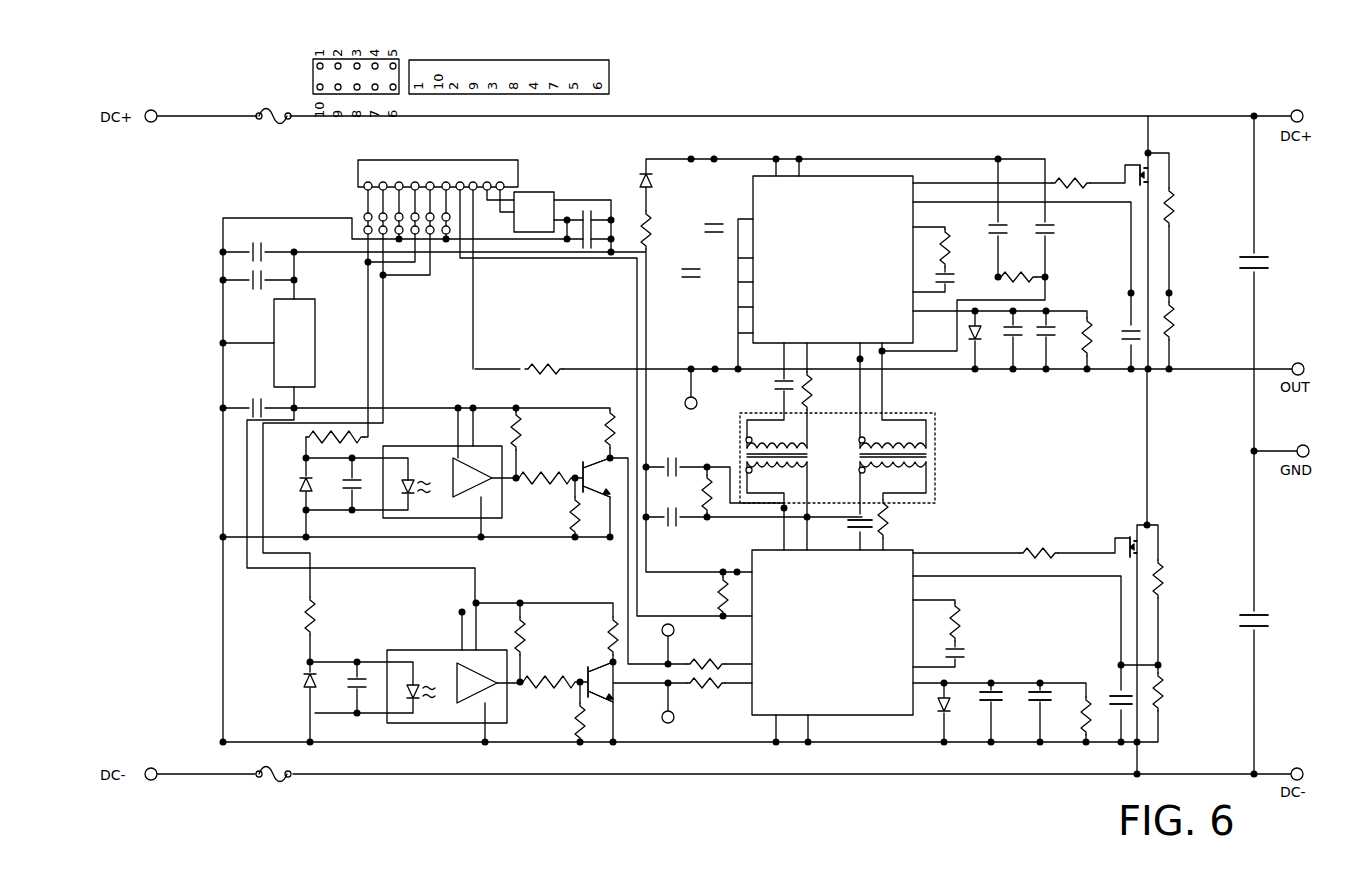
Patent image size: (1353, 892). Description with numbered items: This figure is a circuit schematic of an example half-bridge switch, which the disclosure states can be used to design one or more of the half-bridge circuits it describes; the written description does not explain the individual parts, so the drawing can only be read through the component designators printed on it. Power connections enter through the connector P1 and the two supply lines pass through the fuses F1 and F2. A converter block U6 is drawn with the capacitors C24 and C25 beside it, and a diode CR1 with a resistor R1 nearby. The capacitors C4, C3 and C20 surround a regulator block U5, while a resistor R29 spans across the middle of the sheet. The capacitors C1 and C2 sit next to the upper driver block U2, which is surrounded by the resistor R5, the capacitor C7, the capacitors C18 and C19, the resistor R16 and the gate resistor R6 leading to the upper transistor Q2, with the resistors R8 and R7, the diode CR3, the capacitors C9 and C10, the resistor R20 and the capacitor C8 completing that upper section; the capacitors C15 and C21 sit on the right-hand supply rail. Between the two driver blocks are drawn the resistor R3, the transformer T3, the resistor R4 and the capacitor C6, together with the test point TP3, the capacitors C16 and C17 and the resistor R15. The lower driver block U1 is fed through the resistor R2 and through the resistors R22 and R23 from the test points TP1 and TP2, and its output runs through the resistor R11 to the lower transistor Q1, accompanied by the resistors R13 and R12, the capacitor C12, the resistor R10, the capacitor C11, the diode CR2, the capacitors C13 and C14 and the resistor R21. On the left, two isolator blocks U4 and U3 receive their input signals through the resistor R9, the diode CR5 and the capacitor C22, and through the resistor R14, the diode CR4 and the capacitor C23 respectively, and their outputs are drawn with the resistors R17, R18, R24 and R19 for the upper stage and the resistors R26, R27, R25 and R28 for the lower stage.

The input connector P1 is at (425, 175).
The fuse F1 is at (273, 106).
The fuse F2 is at (273, 764).
The DC-DC converter U6 is at (534, 208).
The capacitor C24 is at (590, 219).
The capacitor C25 is at (580, 239).
The diode CR1 is at (630, 179).
The resistor R1 is at (656, 229).
The capacitor C4 is at (265, 245).
The capacitor C3 is at (259, 287).
The capacitor C20 is at (258, 404).
The voltage regulator M78L05 U5 is at (310, 343).
The resistor R29 is at (547, 358).
The capacitor C1 is at (682, 272).
The capacitor C2 is at (718, 217).
The high side gate driver IXBD4411 U2 is at (834, 262).
The resistor R5 is at (962, 243).
The capacitor C7 is at (959, 279).
The capacitor C18 is at (1009, 229).
The capacitor C19 is at (1066, 229).
The resistor R16 is at (1017, 278).
The gate resistor R6 is at (1071, 168).
The high side MOSFET Q2 is at (1134, 171).
The resistor R8 is at (1181, 207).
The resistor R7 is at (1183, 321).
The diode 1N5817 CR3 is at (993, 340).
The capacitor C9 is at (1022, 344).
The capacitor C10 is at (1057, 344).
The resistor R20 is at (1098, 340).
The capacitor C8 is at (1121, 332).
The capacitor C15 is at (1265, 252).
The capacitor C21 is at (1265, 610).
The resistor R3 is at (818, 390).
The transformer T3 is at (837, 458).
The resistor R4 is at (893, 519).
The capacitor C6 is at (844, 513).
The test point TP3 is at (691, 420).
The capacitor C16 is at (665, 466).
The capacitor C17 is at (674, 517).
The resistor R15 is at (707, 494).
The low side gate driver IXBD4410 U1 is at (833, 637).
The resistor R2 is at (710, 596).
The resistor R22 is at (708, 656).
The resistor R23 is at (708, 692).
The test point TP1 is at (667, 631).
The test point TP2 is at (666, 718).
The gate resistor R11 is at (1039, 538).
The low side MOSFET Q1 is at (1124, 540).
The resistor R13 is at (1170, 578).
The resistor R12 is at (1172, 692).
The capacitor C12 is at (1110, 680).
The resistor R10 is at (972, 622).
The capacitor C11 is at (971, 656).
The diode 1N5817 CR2 is at (962, 710).
The capacitor C13 is at (1004, 708).
The capacitor C14 is at (1054, 708).
The resistor R21 is at (1098, 716).
The resistor R9 is at (343, 444).
The diode CR5 is at (289, 484).
The capacitor C22 is at (339, 486).
The optocoupler 6N137 U4 is at (439, 482).
The resistor R17 is at (529, 434).
The resistor R18 is at (545, 480).
The resistor R24 is at (597, 430).
The resistor R19 is at (563, 516).
The resistor R14 is at (323, 615).
The diode CR4 is at (291, 683).
The capacitor C23 is at (344, 689).
The optocoupler 6N137 U3 is at (445, 685).
The resistor R26 is at (533, 636).
The resistor R27 is at (549, 685).
The resistor R25 is at (600, 636).
The resistor R28 is at (567, 722).